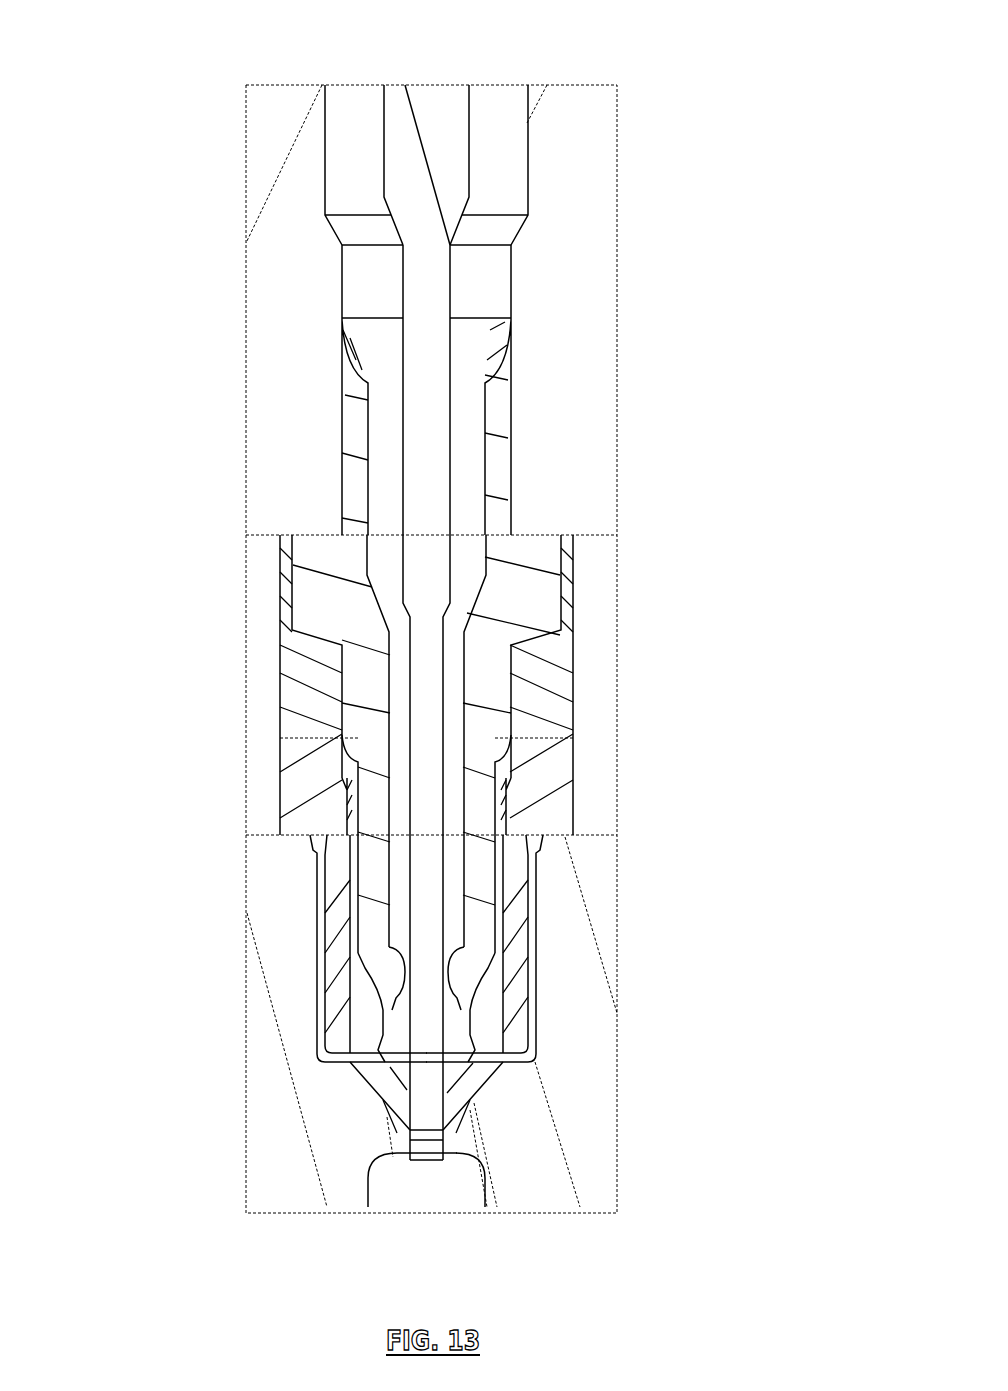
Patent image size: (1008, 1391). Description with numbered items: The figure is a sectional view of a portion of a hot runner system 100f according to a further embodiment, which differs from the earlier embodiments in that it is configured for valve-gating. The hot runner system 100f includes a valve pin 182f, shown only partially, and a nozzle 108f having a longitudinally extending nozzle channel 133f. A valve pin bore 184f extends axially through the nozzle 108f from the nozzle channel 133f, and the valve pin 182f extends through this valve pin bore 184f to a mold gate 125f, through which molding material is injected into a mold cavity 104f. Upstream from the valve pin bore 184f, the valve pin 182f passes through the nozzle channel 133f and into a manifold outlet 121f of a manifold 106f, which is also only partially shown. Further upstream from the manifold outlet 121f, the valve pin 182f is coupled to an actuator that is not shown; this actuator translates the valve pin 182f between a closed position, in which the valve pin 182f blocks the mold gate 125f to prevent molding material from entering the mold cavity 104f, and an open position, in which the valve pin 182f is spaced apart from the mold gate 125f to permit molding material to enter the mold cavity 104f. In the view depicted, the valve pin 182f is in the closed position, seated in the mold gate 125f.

The hot runner system 100f is at (110, 122).
The manifold outlet 121f is at (527, 168).
The manifold 106f is at (557, 333).
The valve pin 182f is at (422, 710).
The nozzle channel 133f is at (400, 740).
The nozzle 108f is at (370, 807).
The valve pin bore 184f is at (460, 953).
The mold gate 125f is at (443, 1147).
The mold cavity 104f is at (383, 1180).